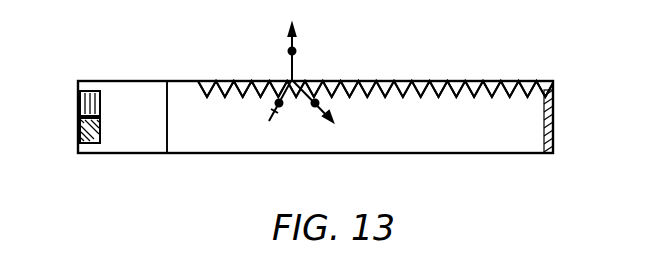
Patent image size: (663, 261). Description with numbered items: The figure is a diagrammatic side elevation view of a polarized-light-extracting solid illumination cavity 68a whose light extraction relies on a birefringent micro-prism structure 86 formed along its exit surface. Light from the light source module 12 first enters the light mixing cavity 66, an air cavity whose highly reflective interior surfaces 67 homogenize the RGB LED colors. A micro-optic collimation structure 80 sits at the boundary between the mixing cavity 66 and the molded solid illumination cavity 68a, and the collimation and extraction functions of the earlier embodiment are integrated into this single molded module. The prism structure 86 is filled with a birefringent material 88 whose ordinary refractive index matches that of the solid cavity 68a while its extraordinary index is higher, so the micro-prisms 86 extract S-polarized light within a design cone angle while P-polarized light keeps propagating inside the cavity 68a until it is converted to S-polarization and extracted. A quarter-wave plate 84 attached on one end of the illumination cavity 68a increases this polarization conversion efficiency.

The module (sensor/detector assembly) 12 is at (80, 116).
The light mixing cavity 66 is at (148, 131).
The highly reflective interior surfaces 67 is at (389, 153).
The solid illumination cavity 68a is at (486, 140).
The micro-optic collimation structure 80 is at (167, 125).
The quarter-wave plate 84 is at (553, 123).
The birefringent micro-prism structure 86 is at (478, 83).
The birefringent material 88 is at (443, 83).